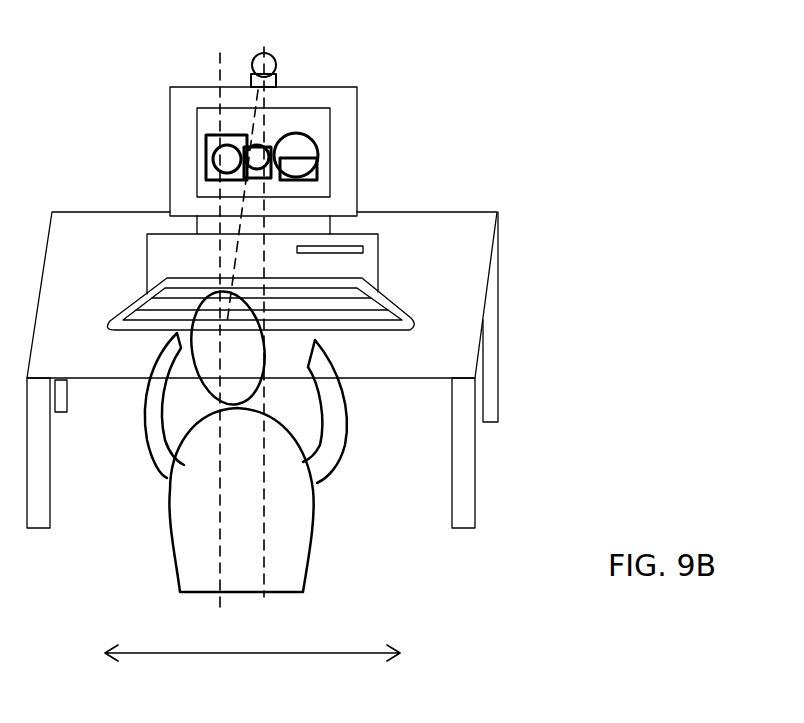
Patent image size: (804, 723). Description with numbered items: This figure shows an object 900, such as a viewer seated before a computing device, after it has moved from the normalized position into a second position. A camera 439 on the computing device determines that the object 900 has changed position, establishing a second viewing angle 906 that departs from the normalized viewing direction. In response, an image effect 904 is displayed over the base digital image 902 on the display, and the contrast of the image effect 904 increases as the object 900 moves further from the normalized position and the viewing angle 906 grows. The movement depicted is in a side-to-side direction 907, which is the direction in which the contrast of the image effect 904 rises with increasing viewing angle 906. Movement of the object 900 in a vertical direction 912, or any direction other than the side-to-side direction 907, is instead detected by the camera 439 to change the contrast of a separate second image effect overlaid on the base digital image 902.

The object 900 is at (182, 348).
The base digital image 902 is at (212, 134).
The image effect 904 is at (313, 137).
The second viewing angle 906 is at (240, 263).
The side-to-side direction 907 is at (307, 653).
The vertical direction 912 is at (352, 165).
The camera 439 is at (275, 62).